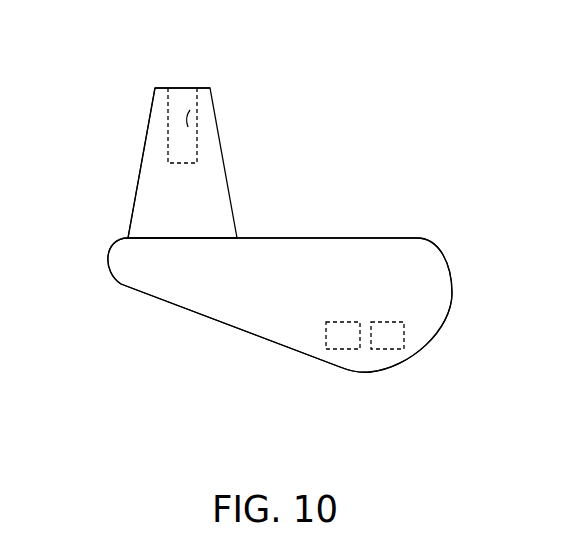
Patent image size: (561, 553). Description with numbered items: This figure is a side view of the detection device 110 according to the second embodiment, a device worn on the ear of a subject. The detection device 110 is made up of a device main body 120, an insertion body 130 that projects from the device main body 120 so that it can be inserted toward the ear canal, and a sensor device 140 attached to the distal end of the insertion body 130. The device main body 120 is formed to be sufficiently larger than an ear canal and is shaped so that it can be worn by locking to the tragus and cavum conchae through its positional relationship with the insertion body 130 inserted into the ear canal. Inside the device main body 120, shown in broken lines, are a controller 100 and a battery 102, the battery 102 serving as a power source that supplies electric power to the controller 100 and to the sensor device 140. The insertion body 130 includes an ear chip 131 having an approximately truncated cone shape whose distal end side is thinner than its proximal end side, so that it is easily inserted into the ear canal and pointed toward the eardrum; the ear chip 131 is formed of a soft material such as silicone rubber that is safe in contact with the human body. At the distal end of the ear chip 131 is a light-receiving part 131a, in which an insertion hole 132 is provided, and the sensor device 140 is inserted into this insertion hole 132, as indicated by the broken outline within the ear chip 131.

The controller 100 is at (345, 350).
The battery 102 is at (384, 350).
The detection device 110 is at (244, 332).
The device main body 120 is at (322, 262).
The insertion body 130 is at (227, 165).
The ear chip 131 is at (140, 165).
The light-receiving part 131a is at (205, 86).
The insertion hole 132 is at (190, 110).
The sensor device 140 is at (180, 88).